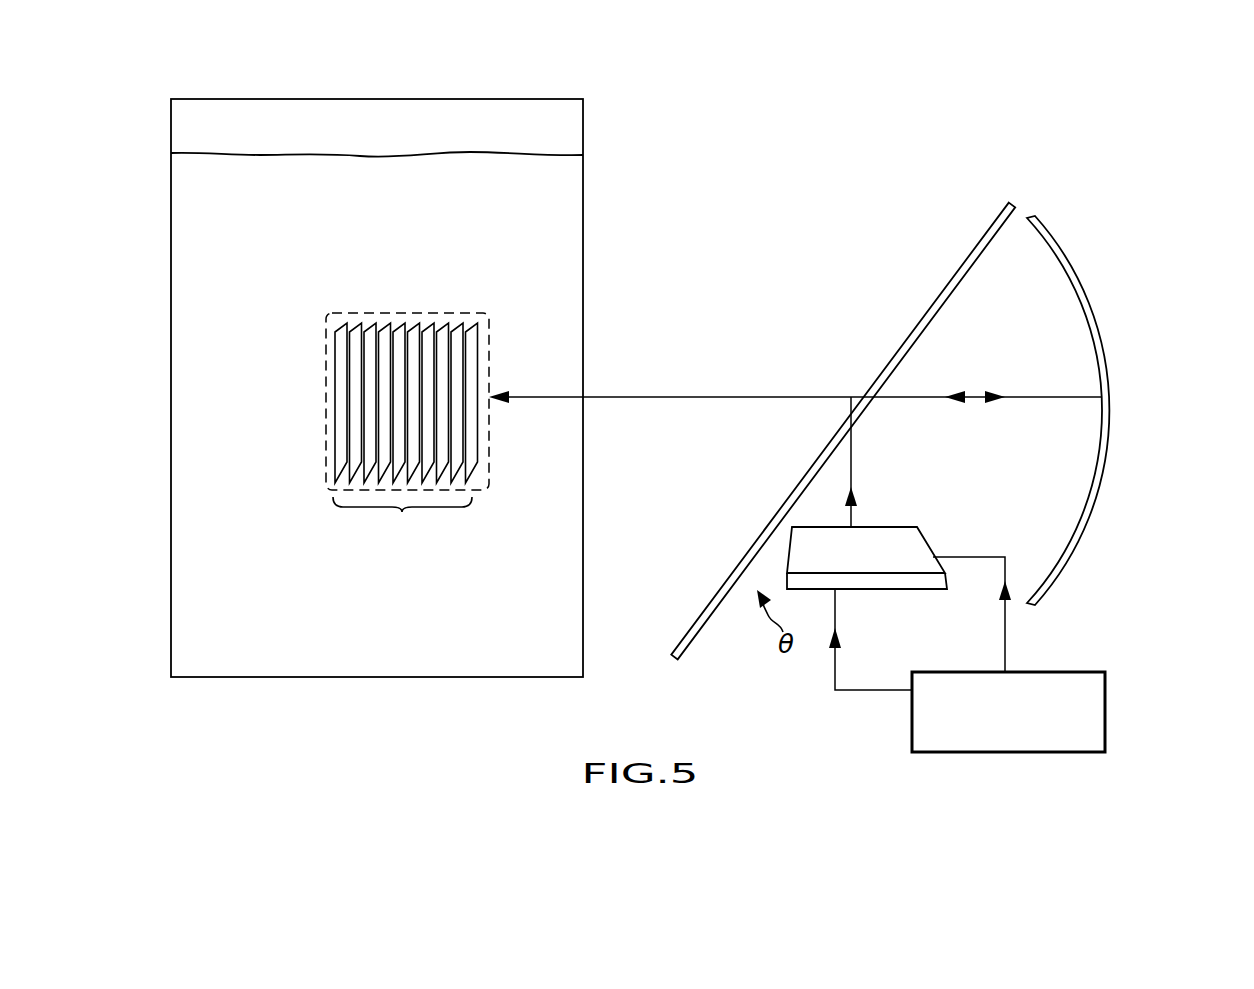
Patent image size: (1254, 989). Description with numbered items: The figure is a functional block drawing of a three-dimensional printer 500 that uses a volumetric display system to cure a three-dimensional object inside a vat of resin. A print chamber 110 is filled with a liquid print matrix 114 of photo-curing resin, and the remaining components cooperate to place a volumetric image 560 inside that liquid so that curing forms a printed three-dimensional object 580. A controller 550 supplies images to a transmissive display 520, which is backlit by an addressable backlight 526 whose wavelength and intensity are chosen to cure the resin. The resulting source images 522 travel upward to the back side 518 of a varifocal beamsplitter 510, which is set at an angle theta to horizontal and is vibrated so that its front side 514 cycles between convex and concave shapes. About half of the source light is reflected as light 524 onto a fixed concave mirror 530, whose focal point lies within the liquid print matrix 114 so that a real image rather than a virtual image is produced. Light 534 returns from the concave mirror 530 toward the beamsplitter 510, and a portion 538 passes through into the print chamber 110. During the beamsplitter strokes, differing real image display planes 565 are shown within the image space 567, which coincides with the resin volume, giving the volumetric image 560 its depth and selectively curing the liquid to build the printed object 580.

The print chamber 110 is at (543, 99).
The liquid print matrix 114 is at (558, 155).
The 3D printer 500 is at (1184, 174).
The varifocal beamsplitter 510 is at (953, 277).
The front side 514 is at (668, 650).
The back side 518 is at (710, 617).
The transmissive display 520 is at (925, 537).
The source images 522 is at (853, 517).
The reflected light 524 is at (1058, 393).
The backlight 526 is at (868, 590).
The concave mirror 530 is at (1040, 213).
The reflected light 534 is at (920, 396).
The transmitted light portion 538 is at (518, 395).
The controller 550 is at (967, 654).
The volumetric image 560 is at (309, 522).
The real image display planes 565 is at (367, 331).
The image space 567 is at (402, 552).
The printed 3D object 580 is at (467, 318).